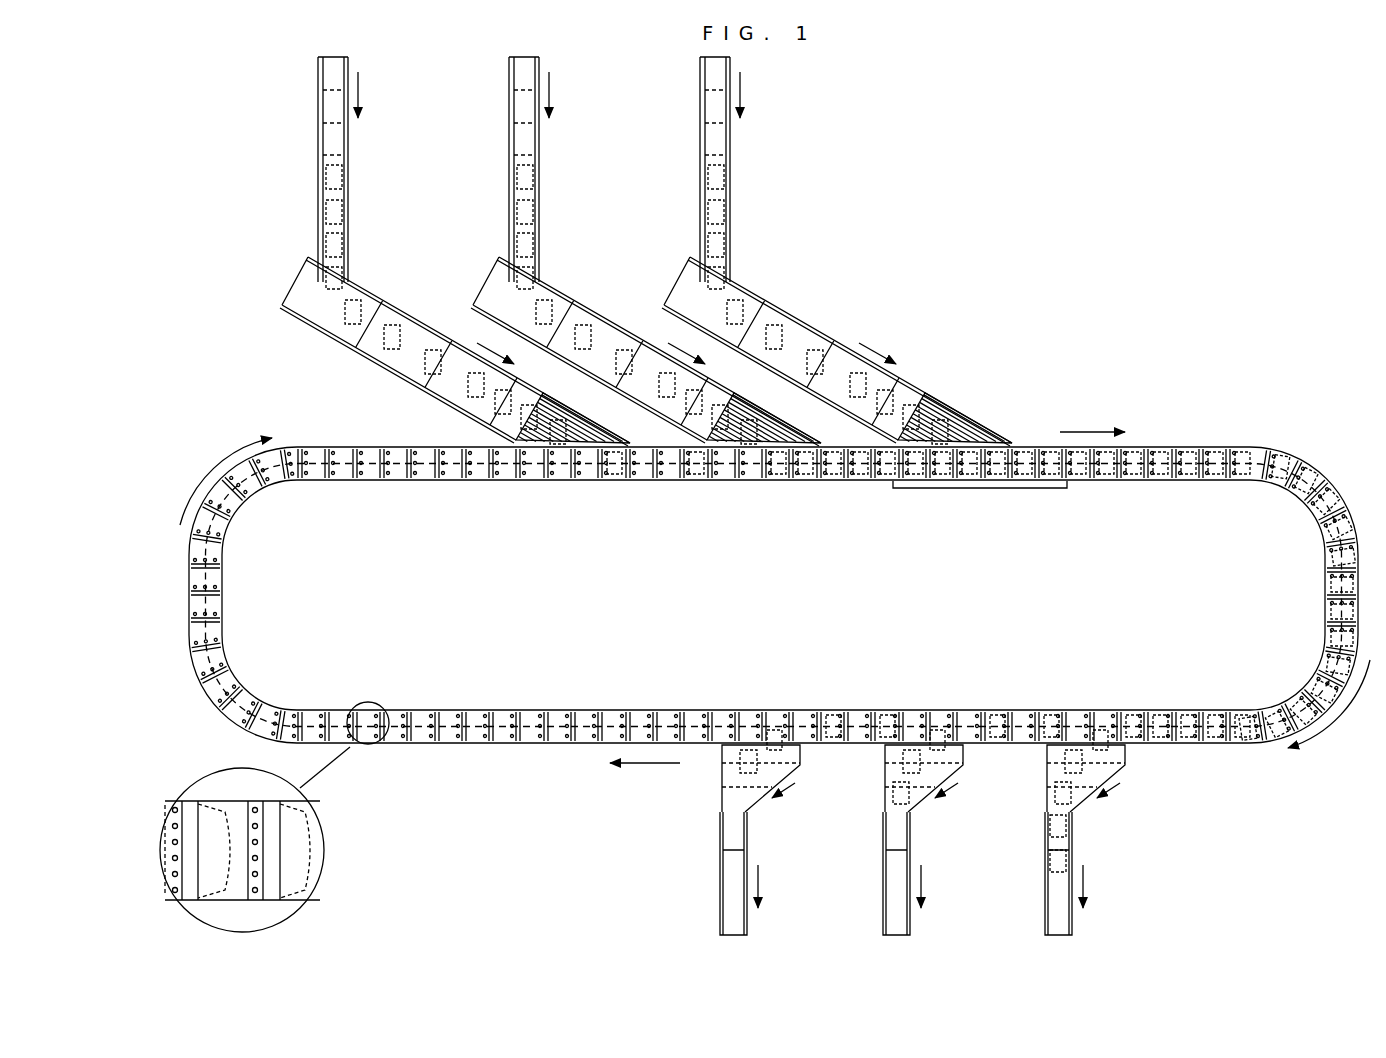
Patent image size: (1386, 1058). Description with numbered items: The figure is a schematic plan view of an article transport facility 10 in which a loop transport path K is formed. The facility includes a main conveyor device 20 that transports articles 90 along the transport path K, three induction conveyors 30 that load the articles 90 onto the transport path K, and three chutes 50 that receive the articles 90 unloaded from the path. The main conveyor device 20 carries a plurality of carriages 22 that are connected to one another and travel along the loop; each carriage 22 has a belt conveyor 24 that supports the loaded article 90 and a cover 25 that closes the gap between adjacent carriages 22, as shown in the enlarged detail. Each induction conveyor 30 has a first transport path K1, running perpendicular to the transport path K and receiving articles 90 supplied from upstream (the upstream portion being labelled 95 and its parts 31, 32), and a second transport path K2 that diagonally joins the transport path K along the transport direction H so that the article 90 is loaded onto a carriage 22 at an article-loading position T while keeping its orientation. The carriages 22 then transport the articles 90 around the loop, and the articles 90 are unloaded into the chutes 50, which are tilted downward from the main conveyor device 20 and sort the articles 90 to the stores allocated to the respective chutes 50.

The article transport facility 10 is at (1000, 288).
The main conveyor device 20 is at (498, 747).
The carriage 22 is at (1025, 445).
The belt conveyor 24 is at (222, 800).
The cover 25 is at (272, 903).
The induction conveyor 30 is at (626, 251).
The first supply conveyor 31 is at (515, 169).
The second supply conveyor 32 is at (362, 276).
The chute 50 is at (730, 892).
The article 90 is at (345, 318).
The upstream conveyor 95 is at (318, 97).
The first transport path K1 is at (312, 211).
The second transport path K2 is at (342, 353).
The transport path K is at (1255, 445).
The transport direction H is at (1100, 425).
The article-loading position T is at (624, 482).